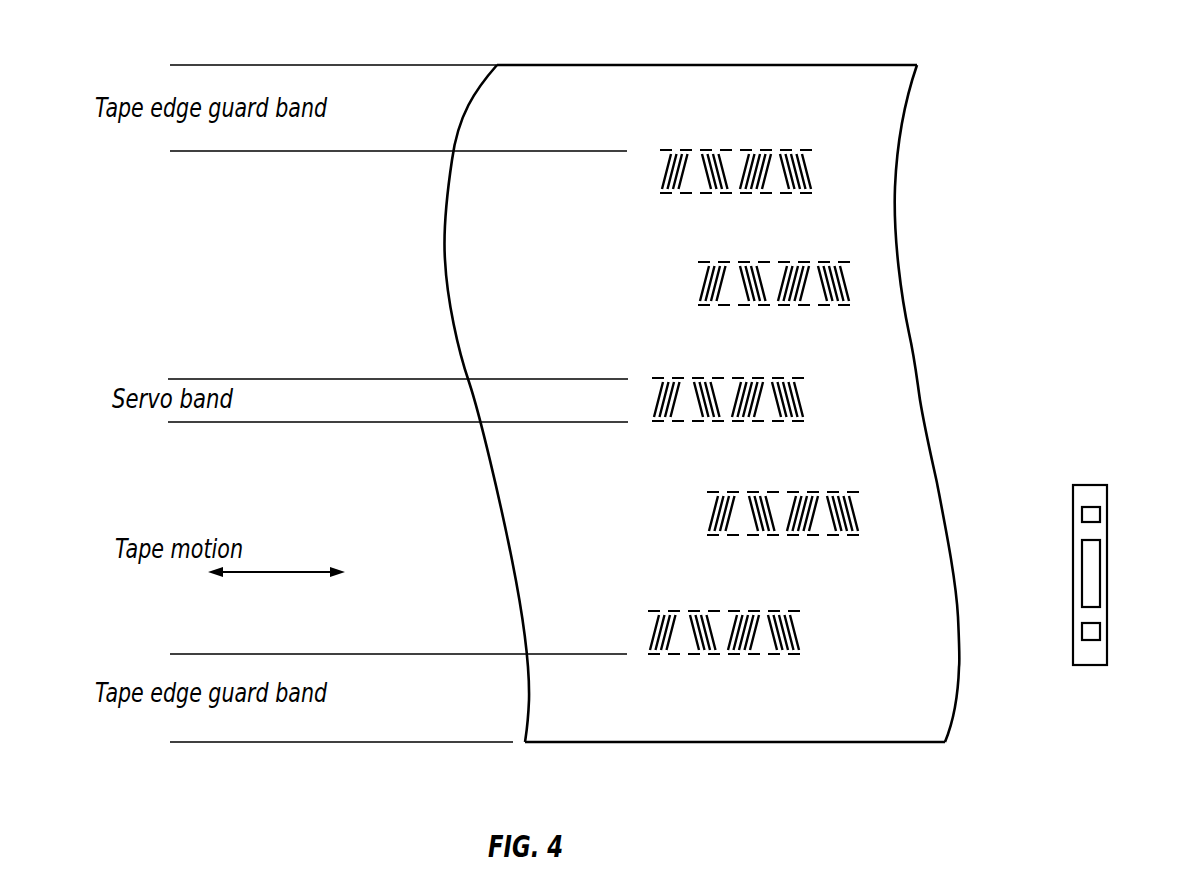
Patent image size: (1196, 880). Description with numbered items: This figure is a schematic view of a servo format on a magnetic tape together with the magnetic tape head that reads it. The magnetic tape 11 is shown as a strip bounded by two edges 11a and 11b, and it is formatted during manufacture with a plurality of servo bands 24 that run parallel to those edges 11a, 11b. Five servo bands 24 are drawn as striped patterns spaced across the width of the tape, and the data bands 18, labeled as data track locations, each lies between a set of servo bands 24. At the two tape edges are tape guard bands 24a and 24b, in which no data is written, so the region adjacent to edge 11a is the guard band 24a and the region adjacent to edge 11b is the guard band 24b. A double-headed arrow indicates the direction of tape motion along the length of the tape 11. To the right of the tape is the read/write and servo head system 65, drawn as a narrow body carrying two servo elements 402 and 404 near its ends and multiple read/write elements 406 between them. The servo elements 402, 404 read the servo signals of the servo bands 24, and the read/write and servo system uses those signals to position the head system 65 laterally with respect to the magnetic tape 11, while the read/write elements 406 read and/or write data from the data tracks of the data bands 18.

The magnetic tape 11 is at (718, 75).
The tape edge 11a is at (515, 63).
The tape edge 11b is at (545, 745).
The data bands 18 is at (838, 220).
The servo bands 24 is at (498, 412).
The tape guard band 24a is at (800, 107).
The tape guard band 24b is at (705, 675).
The read/write and servo head system 65 is at (1092, 485).
The servo element 402 is at (1100, 515).
The servo element 404 is at (1100, 632).
The read/write elements 406 is at (1100, 565).